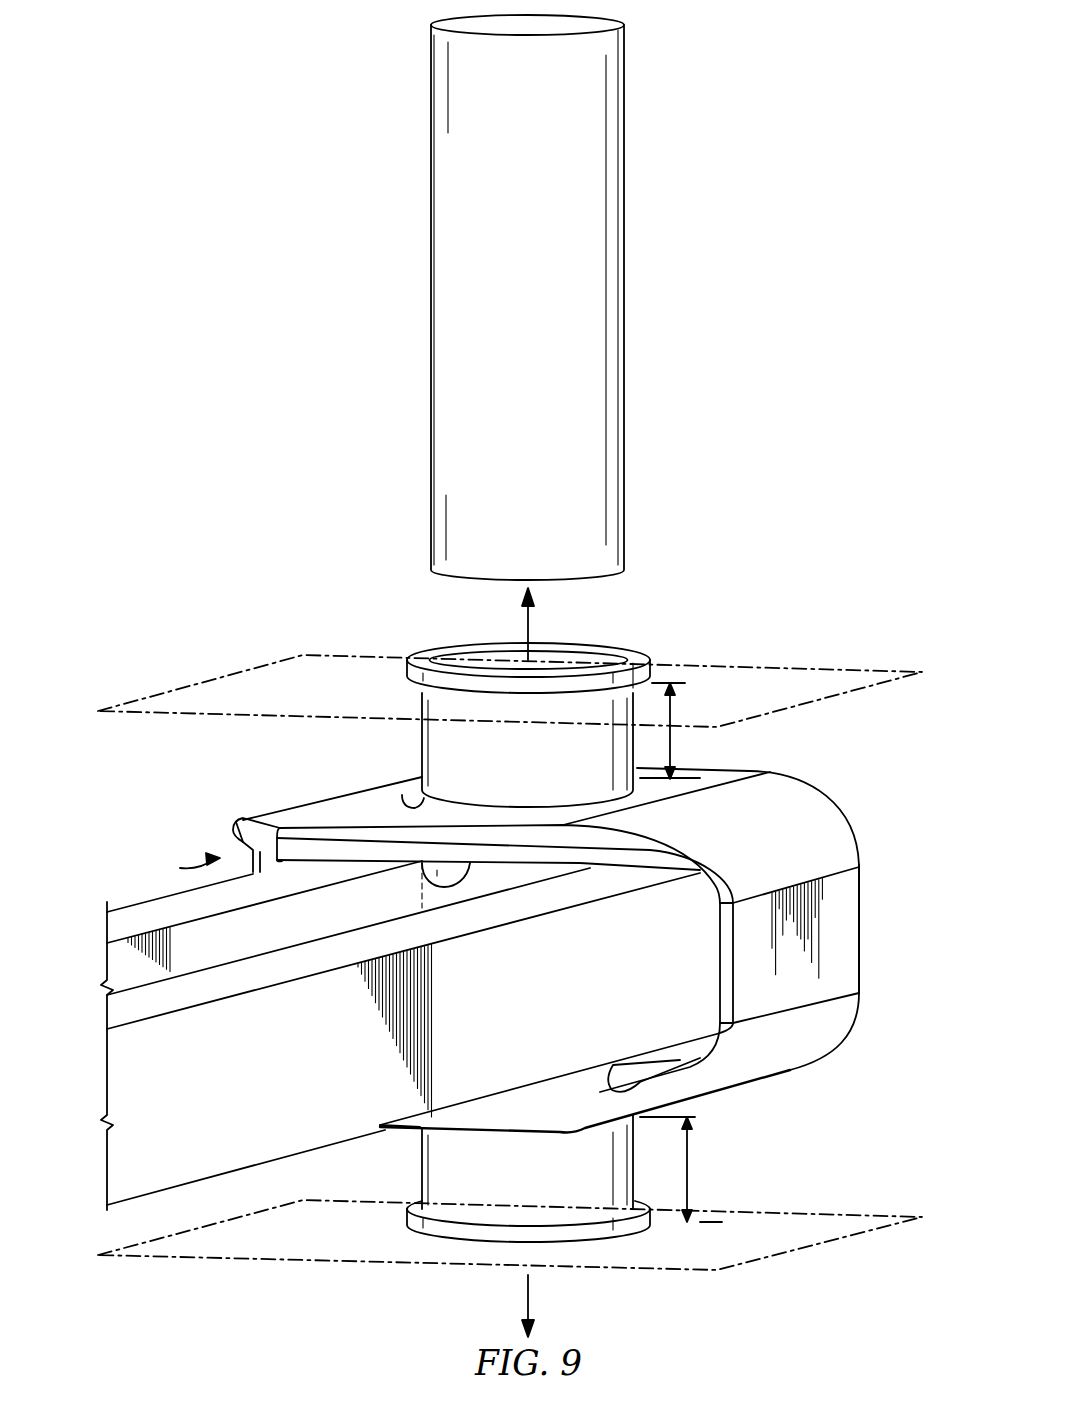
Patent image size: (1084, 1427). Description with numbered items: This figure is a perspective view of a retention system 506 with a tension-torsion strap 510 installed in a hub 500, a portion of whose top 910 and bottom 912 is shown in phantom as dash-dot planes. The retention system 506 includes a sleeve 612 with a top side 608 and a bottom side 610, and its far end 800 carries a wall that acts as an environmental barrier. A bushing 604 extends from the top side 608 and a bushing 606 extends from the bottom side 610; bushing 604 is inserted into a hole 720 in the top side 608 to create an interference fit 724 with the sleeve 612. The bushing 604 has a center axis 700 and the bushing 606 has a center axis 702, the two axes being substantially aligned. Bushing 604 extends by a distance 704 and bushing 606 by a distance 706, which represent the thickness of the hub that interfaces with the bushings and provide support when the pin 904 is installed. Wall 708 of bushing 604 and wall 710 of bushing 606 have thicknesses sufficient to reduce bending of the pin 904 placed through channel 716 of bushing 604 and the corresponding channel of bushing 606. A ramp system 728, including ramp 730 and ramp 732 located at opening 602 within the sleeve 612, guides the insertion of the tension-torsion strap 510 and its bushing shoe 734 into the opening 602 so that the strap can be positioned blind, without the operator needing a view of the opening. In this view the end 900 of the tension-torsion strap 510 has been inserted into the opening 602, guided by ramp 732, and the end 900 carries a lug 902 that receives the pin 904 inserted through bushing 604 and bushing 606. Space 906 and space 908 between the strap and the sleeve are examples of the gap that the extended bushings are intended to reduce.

The hub 500 is at (513, 676).
The retention system 506 is at (534, 943).
The tension-torsion strap 510 is at (400, 1035).
The opening 602 is at (523, 1182).
The bushing 604 is at (491, 698).
The bushing 606 is at (523, 1231).
The top side 608 is at (455, 921).
The bottom side 610 is at (619, 1089).
The sleeve 612 is at (817, 902).
The center axis 700 is at (532, 632).
The center axis 702 is at (531, 1293).
The distance 704 is at (673, 713).
The distance 706 is at (690, 1170).
The wall 708 is at (405, 670).
The wall 710 is at (405, 1218).
The channel 716 is at (498, 655).
The hole 720 is at (402, 795).
The interference fit 724 is at (527, 805).
The ramp system 728 is at (180, 868).
The ramp 730 is at (238, 840).
The ramp 732 is at (505, 1130).
The bushing shoe 734 is at (718, 966).
The end 800 is at (860, 930).
The end 900 is at (707, 1000).
The lug 902 is at (422, 890).
The pin 904 is at (624, 121).
The space 906 is at (267, 822).
The space 908 is at (610, 1090).
The top 910 is at (168, 690).
The bottom 912 is at (236, 1260).